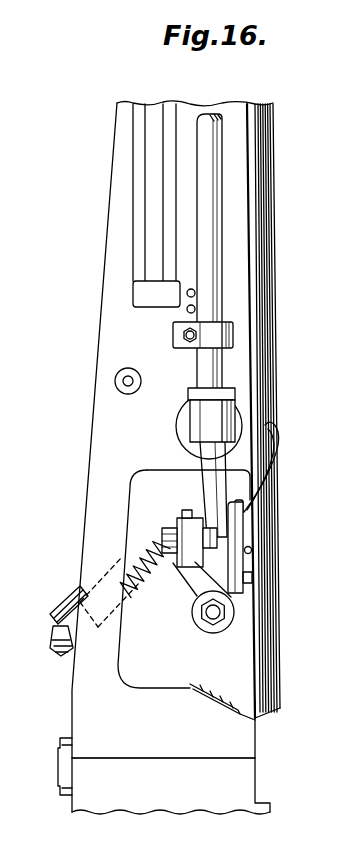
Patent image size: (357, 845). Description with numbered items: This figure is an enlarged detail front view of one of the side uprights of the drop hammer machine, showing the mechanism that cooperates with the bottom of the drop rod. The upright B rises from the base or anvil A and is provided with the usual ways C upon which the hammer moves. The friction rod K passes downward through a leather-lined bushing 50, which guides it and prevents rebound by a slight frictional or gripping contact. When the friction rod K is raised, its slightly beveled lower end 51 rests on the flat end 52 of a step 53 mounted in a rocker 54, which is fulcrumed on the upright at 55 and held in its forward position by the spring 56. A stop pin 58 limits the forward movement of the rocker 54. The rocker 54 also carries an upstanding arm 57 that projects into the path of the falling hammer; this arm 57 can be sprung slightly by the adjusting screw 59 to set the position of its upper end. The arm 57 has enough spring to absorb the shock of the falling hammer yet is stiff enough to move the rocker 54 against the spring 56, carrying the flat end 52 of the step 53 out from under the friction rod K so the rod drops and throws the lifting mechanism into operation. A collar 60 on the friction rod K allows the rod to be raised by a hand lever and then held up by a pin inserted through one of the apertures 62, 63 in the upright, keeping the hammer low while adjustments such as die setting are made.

The base or anvil A is at (247, 773).
The upright B is at (105, 440).
The ways C is at (280, 483).
The friction rod K is at (213, 282).
The leather-lined bushing 50 is at (237, 412).
The beveled lower end 51 is at (203, 485).
The flat end 52 is at (248, 587).
The step 53 is at (210, 540).
The rocker 54 is at (190, 590).
The fulcrum 55 is at (220, 612).
The spring 56 is at (140, 597).
The upstanding arm 57 is at (275, 457).
The stop pin 58 is at (251, 548).
The adjusting screw 59 is at (245, 508).
The collar 60 is at (233, 341).
The aperture 62 is at (195, 294).
The aperture 63 is at (195, 310).